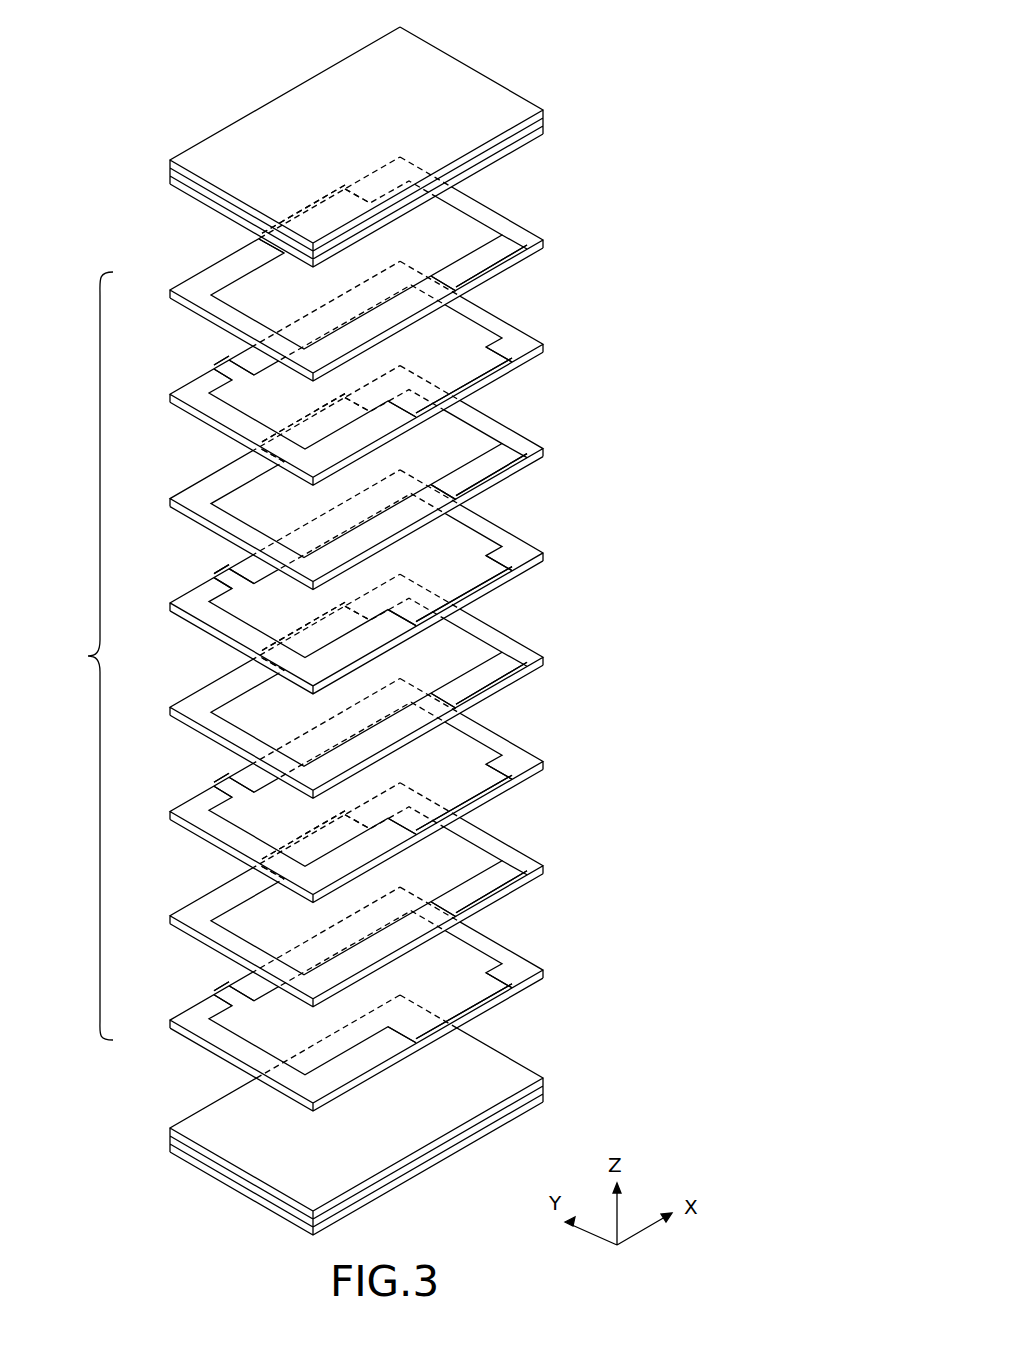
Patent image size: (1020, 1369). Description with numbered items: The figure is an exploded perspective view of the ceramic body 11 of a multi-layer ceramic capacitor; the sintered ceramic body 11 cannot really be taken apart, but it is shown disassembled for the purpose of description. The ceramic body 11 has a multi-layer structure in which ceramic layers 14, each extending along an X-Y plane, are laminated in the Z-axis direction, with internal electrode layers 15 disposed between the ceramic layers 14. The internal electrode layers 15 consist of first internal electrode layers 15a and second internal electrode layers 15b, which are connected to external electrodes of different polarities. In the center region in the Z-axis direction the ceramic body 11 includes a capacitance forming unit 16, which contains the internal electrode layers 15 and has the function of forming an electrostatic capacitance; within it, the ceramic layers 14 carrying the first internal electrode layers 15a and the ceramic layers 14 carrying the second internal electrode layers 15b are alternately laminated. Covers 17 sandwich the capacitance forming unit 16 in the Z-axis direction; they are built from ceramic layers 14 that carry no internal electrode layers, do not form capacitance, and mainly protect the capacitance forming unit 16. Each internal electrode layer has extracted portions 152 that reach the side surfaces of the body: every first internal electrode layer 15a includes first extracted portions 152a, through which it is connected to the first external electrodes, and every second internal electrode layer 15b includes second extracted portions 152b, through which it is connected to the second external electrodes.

The ceramic body 11 is at (507, 51).
The ceramic layers 14 is at (546, 120).
The internal electrode layers 15 is at (384, 634).
The first internal electrode layers 15a is at (482, 228).
The second internal electrode layers 15b is at (482, 332).
The capacitance forming unit 16 is at (92, 658).
The covers 17 is at (154, 173).
The extracted portions 152 is at (386, 640).
The first extracted portions 152a is at (358, 357).
The second extracted portions 152b is at (358, 460).